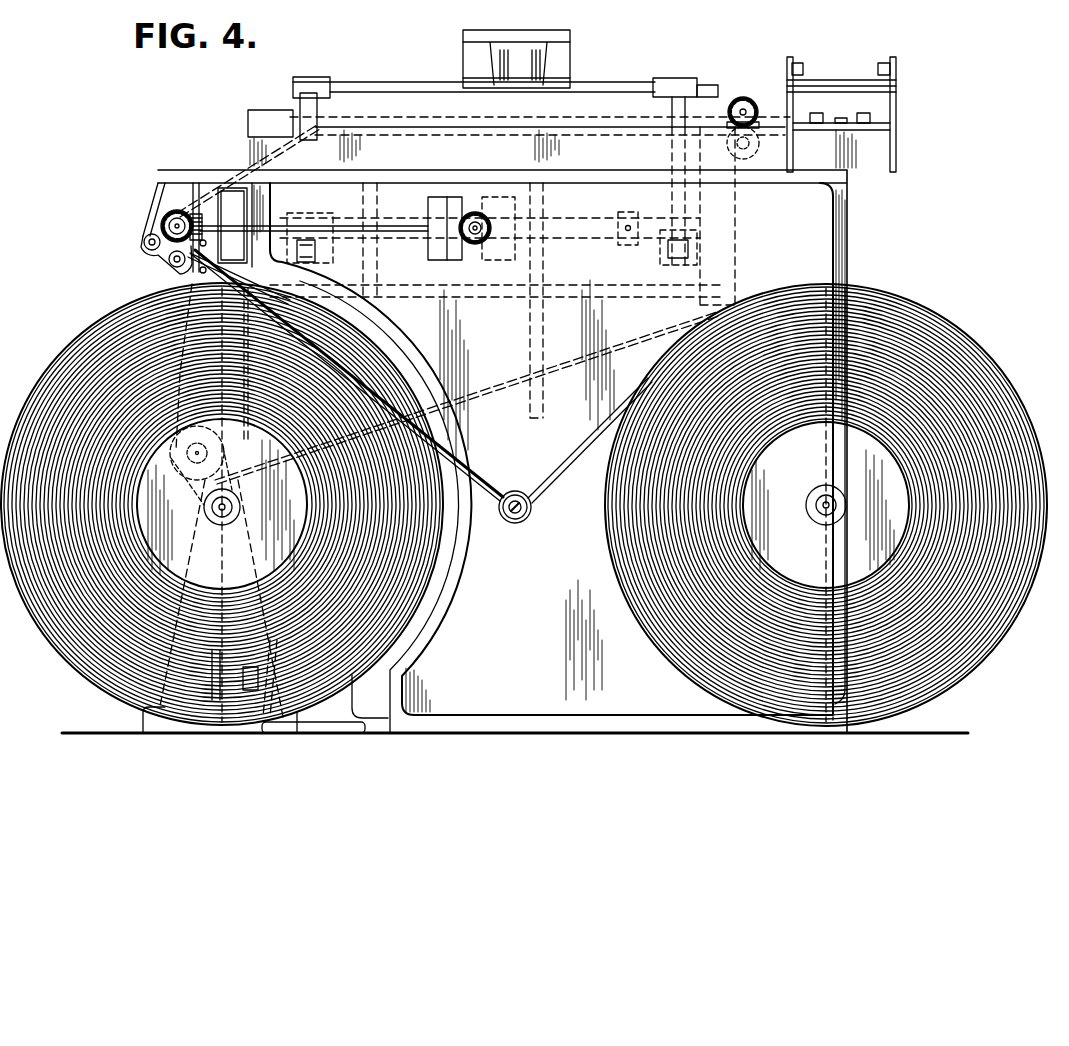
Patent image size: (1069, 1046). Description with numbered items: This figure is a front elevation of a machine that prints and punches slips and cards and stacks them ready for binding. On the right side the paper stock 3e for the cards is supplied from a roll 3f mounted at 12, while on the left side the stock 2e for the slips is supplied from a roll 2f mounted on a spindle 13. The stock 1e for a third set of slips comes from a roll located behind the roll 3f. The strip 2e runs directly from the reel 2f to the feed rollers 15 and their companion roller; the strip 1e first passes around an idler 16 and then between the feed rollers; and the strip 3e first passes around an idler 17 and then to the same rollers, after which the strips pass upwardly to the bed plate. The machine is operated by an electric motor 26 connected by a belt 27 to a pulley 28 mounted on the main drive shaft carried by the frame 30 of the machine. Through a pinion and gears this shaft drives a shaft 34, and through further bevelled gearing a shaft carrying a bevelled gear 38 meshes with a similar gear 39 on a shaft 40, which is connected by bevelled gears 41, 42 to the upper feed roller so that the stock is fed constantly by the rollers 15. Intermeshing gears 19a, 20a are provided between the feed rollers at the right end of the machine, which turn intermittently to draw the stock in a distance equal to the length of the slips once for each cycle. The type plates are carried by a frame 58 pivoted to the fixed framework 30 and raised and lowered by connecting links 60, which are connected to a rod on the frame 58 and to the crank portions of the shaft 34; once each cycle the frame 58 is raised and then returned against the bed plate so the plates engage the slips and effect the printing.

The frame 58 is at (350, 97).
The connecting links 60 is at (305, 103).
The gear 19a is at (742, 98).
The gear 20a is at (752, 160).
The bevelled gear 42 is at (175, 209).
The bevelled gear 41 is at (194, 211).
The pulley 28 is at (250, 200).
The feed rollers 15 is at (166, 262).
The stock 2e is at (300, 262).
The shaft 40 is at (398, 233).
The bevelled gear 39 is at (465, 214).
The bevelled gear 38 is at (466, 244).
The shaft 34 is at (604, 238).
The frame 30 is at (440, 296).
The roll 2f is at (83, 360).
The spindle 13 is at (205, 510).
The idler 16 is at (180, 470).
The belt 27 is at (203, 640).
The roll 3f is at (620, 553).
The mounting 12 is at (822, 513).
The idler 17 is at (515, 490).
The paper stock 3e is at (597, 447).
The stock 1e is at (600, 350).
The electric motor 26 is at (340, 697).